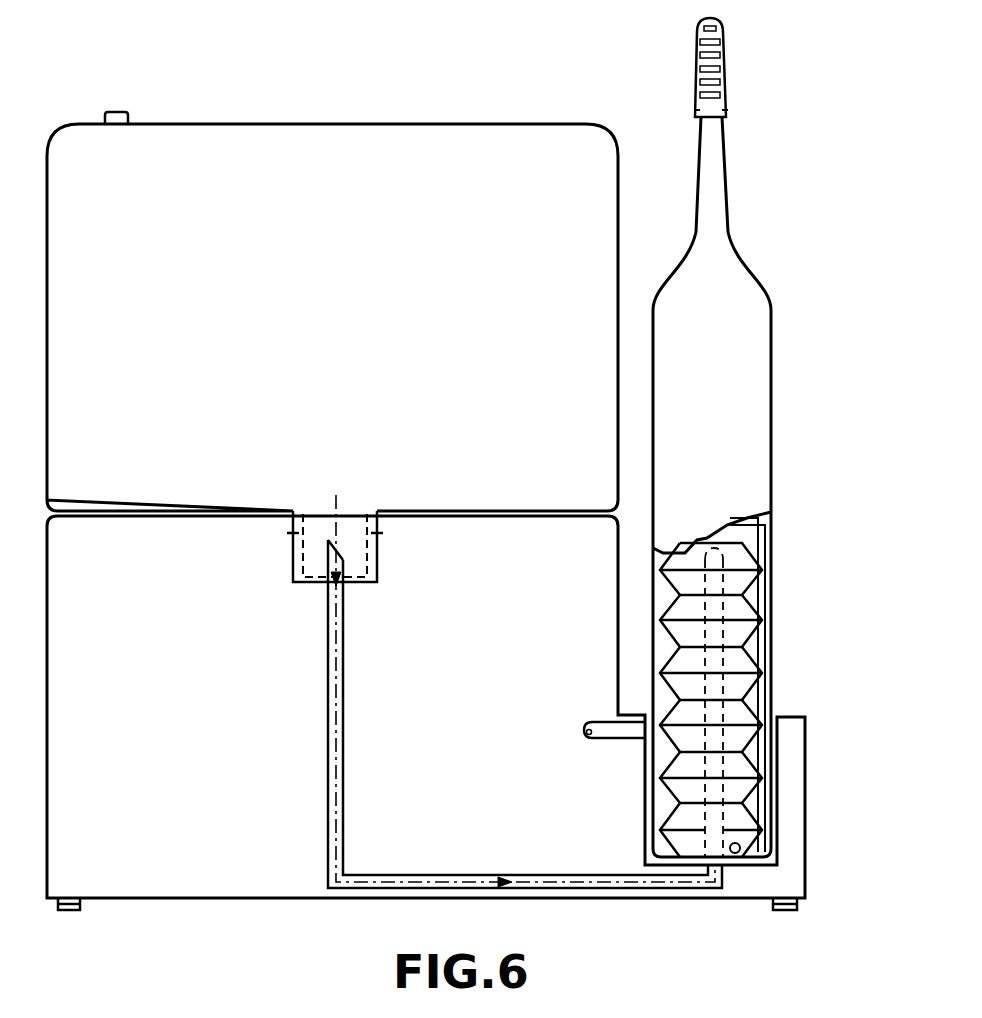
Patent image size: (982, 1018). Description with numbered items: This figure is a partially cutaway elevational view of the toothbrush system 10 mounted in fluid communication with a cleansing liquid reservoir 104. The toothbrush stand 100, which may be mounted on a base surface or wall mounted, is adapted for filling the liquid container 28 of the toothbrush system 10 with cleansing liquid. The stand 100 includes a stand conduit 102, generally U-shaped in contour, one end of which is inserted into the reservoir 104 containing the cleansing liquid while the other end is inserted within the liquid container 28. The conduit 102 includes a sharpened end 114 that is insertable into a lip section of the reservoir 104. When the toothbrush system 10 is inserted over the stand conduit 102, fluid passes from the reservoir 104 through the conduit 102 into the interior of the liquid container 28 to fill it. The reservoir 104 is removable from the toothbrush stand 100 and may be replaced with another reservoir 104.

The toothbrush system 10 is at (772, 428).
The liquid container 28 is at (743, 665).
The toothbrush stand 100 is at (250, 900).
The stand conduit 102 is at (346, 710).
The reservoir 104 is at (400, 124).
The sharpened end 114 is at (338, 555).